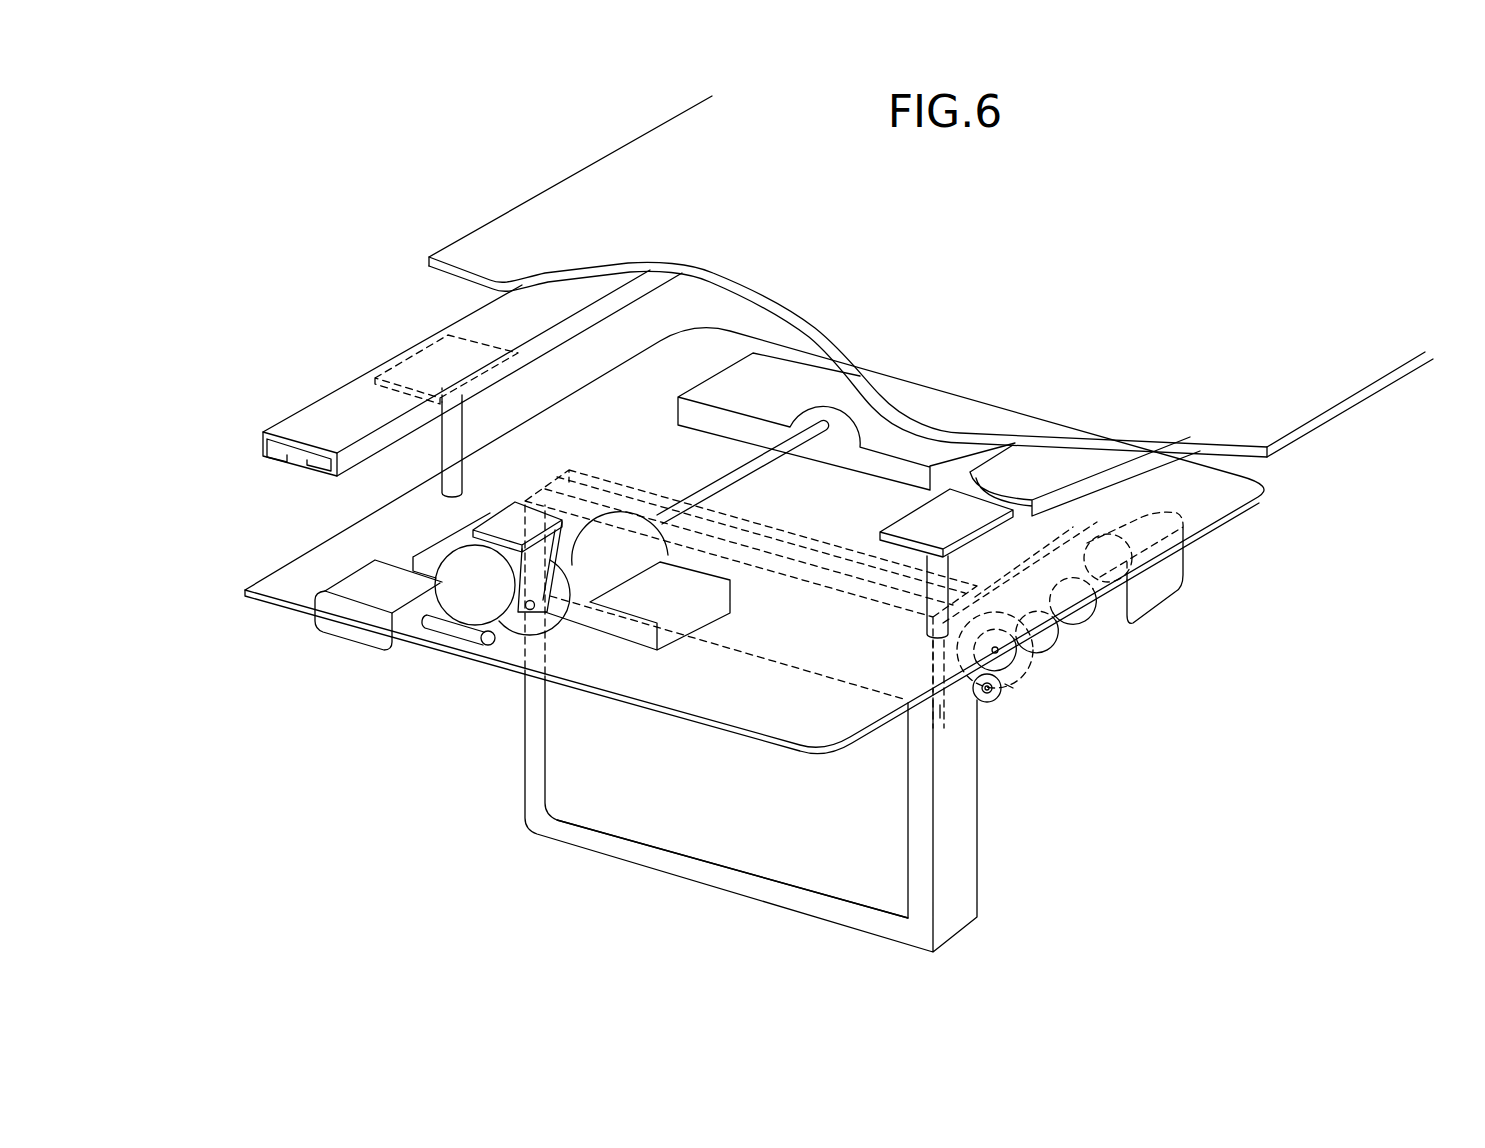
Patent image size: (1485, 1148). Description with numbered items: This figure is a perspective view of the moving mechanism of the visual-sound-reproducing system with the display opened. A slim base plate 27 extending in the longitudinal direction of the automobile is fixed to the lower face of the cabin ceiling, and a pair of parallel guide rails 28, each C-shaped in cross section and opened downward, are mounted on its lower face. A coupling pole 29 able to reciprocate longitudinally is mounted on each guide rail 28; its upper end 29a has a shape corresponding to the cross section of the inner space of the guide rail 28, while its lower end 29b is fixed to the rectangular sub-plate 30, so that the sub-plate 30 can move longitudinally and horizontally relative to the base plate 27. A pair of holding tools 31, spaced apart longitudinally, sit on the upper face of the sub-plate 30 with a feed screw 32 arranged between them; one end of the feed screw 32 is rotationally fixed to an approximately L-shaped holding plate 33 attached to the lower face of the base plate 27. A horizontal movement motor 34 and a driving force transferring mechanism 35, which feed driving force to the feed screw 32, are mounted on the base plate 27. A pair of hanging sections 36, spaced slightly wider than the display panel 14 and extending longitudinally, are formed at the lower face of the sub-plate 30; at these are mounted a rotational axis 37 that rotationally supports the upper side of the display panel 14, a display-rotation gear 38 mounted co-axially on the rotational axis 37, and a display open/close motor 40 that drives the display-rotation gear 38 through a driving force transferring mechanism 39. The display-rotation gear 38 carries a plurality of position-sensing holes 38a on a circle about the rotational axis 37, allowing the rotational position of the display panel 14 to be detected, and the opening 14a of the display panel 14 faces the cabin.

The display panel 14 is at (920, 910).
The opening of frame body 14a is at (708, 838).
The base plate 27 is at (493, 243).
The guide rail 28 is at (308, 422).
The coupling pole 29 is at (473, 434).
The upper end 29a is at (412, 344).
The lower end 29b is at (445, 447).
The sub-plate 30 is at (293, 580).
The holding tool 31 is at (792, 380).
The feed screw 32 is at (735, 478).
The holding plate 33 is at (510, 522).
The horizontal movement motor 34 is at (350, 626).
The driving force transferring mechanism 35 is at (473, 604).
The hanging section 36 is at (1083, 558).
The rotational axis 37 is at (1013, 688).
The display-rotation gear 38 is at (1000, 683).
The position-sensing hole 38a is at (988, 694).
The driving force transferring mechanism 39 is at (1080, 633).
The display open/close motor 40 is at (1145, 598).